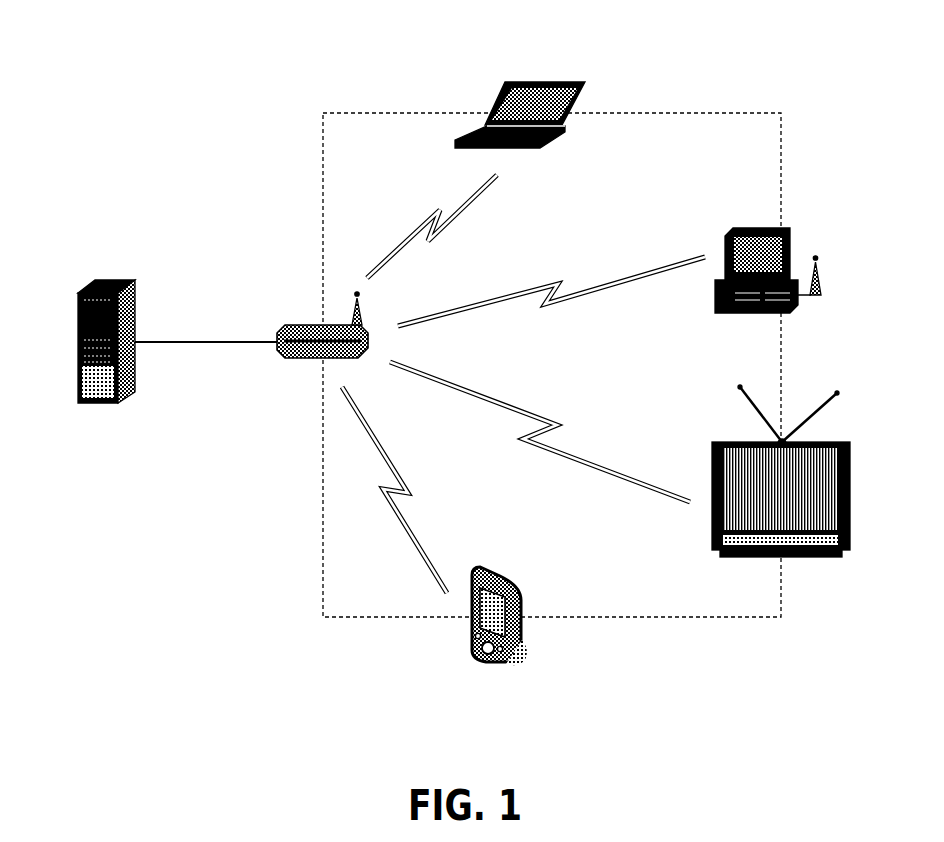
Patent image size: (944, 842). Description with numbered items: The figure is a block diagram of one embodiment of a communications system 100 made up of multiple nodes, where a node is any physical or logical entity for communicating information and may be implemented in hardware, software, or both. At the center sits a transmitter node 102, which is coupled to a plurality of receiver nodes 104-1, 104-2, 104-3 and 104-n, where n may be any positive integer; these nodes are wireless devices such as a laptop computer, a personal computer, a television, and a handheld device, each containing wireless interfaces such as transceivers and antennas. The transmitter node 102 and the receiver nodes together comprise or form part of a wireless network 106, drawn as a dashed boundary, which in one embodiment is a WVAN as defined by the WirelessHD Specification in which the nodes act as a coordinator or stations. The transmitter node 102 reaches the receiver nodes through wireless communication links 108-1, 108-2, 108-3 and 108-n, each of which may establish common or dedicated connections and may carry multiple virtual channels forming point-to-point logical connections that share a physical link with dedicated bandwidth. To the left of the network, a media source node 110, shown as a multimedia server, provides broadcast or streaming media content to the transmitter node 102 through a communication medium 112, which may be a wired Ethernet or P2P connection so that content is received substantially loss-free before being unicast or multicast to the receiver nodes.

The communications system 100 is at (278, 34).
The transmitter node 102 is at (317, 333).
The receiver node 104-1 is at (509, 124).
The receiver node 104-2 is at (754, 280).
The receiver node 104-3 is at (781, 481).
The receiver node 104-n is at (497, 626).
The wireless network 106 is at (703, 113).
The wireless communication link 108-1 is at (434, 213).
The wireless communication link 108-2 is at (542, 286).
The wireless communication link 108-3 is at (544, 420).
The wireless communication link 108-n is at (383, 492).
The media source node 110 is at (103, 280).
The communication medium 112 is at (212, 341).